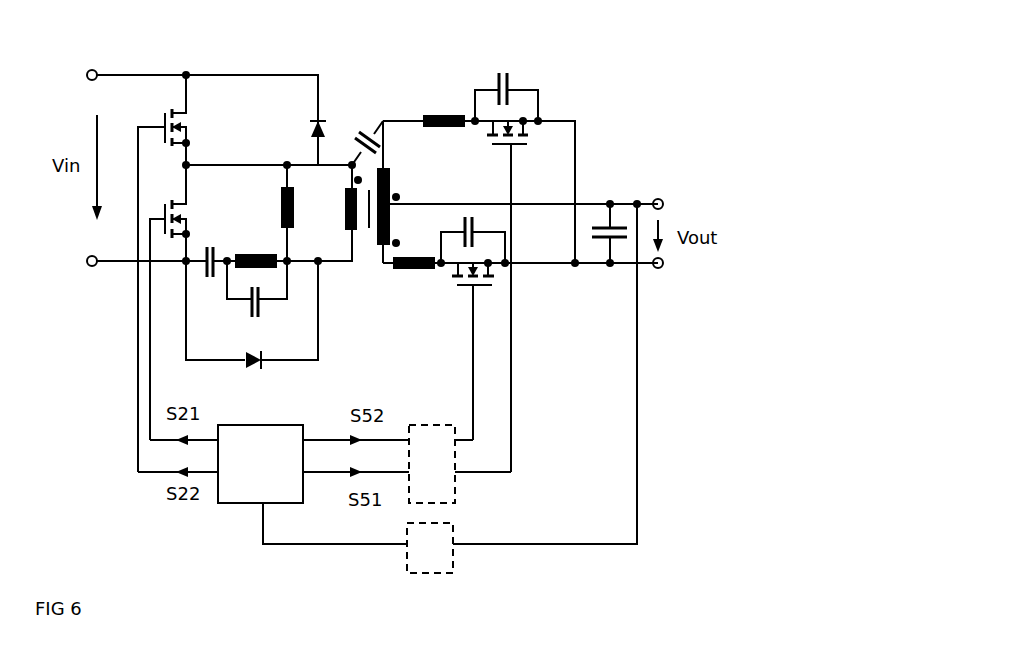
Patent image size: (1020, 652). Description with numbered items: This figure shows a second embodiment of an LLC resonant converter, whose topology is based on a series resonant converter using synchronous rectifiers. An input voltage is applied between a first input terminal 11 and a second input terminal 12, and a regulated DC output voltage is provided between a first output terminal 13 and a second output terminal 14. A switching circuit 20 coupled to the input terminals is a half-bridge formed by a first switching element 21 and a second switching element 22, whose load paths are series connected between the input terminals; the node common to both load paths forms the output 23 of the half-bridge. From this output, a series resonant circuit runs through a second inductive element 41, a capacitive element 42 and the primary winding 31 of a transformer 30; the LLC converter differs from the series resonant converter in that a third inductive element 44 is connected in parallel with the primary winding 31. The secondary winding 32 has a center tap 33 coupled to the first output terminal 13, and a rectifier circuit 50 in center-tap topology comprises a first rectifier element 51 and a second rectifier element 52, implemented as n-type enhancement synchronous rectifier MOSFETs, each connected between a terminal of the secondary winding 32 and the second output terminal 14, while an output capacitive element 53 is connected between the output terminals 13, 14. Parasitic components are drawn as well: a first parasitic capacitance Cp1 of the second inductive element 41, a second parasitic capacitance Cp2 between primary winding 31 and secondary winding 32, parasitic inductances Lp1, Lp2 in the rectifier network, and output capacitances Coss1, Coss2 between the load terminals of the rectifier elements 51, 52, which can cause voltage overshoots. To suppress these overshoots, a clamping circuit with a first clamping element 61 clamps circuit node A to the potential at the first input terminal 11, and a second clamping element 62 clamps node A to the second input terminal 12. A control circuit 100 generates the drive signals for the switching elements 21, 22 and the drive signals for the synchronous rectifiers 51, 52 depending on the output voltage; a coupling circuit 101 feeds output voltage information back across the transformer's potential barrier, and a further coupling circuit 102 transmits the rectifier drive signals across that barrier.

The first input terminal 11 is at (90, 70).
The second input terminal 12 is at (92, 268).
The first output terminal 13 is at (660, 198).
The second output terminal 14 is at (661, 270).
The switching circuit 20 is at (192, 52).
The first switching element 21 is at (190, 130).
The second switching element 22 is at (190, 221).
The output of the half-bridge circuit 23 is at (241, 165).
The transformer 30 is at (490, 214).
The primary winding 31 is at (343, 210).
The secondary winding 32 is at (392, 188).
The center tap 33 is at (396, 208).
The second inductive element 41 is at (250, 254).
The capacitive element 42 is at (208, 283).
The third inductive element 44 is at (278, 200).
The rectifier circuit 50 is at (484, 251).
The first rectifier element 51 is at (518, 146).
The second rectifier element 52 is at (480, 288).
The capacitive element 53 is at (598, 212).
The first clamping element 61 is at (255, 369).
The second clamping element 62 is at (308, 122).
The control circuit 100 is at (234, 510).
The coupling circuit 101 is at (430, 577).
The further coupling circuit 102 is at (424, 416).
The first parasitic capacitance Cp1 is at (362, 120).
The second parasitic capacitance Cp2 is at (262, 312).
The parasitic inductance Lp1 is at (450, 118).
The parasitic inductance Lp2 is at (413, 270).
The output capacitance Coss1 is at (510, 80).
The output capacitance Coss2 is at (466, 214).